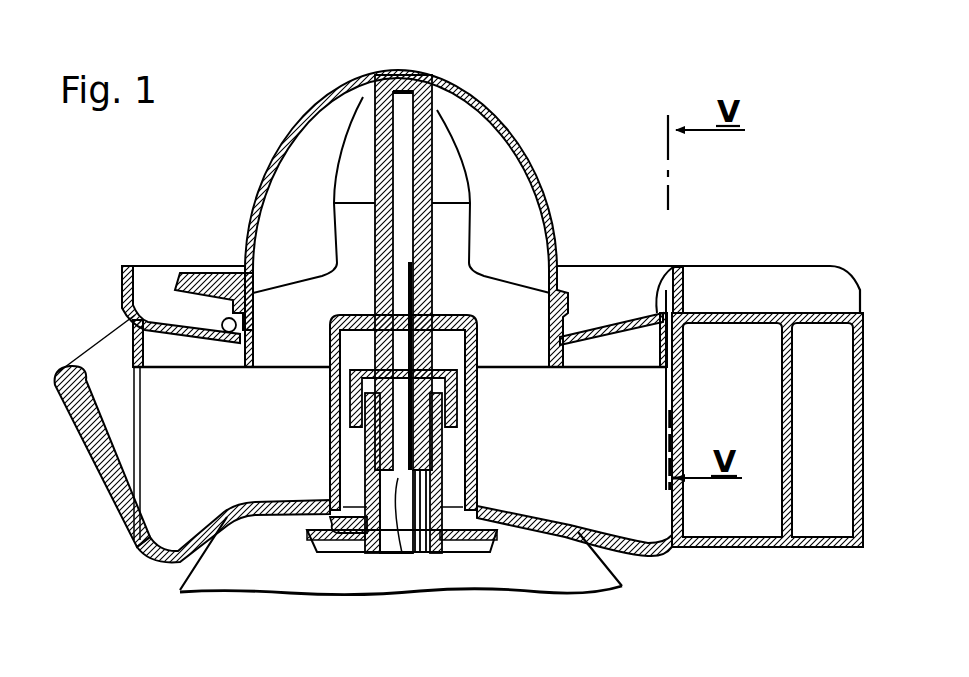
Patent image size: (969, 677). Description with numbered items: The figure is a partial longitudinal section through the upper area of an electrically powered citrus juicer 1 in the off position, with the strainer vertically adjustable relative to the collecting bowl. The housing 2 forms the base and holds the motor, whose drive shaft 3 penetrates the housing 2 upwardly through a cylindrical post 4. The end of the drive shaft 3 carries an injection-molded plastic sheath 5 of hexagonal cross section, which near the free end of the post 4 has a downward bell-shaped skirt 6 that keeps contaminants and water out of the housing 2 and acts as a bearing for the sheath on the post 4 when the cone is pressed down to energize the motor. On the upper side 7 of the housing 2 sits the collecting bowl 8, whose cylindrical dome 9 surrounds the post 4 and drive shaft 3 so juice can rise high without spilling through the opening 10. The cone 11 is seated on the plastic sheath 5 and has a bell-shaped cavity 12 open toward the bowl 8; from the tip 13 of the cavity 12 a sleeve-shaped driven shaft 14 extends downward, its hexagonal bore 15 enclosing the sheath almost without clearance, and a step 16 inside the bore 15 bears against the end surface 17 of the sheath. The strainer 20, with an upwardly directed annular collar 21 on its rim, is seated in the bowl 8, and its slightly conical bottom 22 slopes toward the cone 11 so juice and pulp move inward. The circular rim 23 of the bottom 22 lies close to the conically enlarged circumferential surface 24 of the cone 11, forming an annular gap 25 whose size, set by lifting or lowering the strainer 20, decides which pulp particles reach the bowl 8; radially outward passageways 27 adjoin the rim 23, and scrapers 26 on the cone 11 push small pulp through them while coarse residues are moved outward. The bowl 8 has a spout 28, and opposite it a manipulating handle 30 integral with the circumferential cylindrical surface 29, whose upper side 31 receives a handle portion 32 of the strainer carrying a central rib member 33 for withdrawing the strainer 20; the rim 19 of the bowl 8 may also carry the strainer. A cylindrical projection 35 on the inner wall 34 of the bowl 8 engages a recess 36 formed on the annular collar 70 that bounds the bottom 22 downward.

The citrus juicer 1 is at (540, 128).
The housing 2 is at (543, 567).
The drive shaft 3 is at (403, 490).
The cylindrical post 4 is at (437, 497).
The plastic sheath 5 is at (423, 343).
The bell-shaped skirt 6 is at (458, 410).
The upper side 7 is at (337, 530).
The collecting bowl 8 is at (280, 517).
The cylindrical dome 9 is at (333, 412).
The opening 10 is at (372, 312).
The cone 11 is at (498, 110).
The bell-shaped cavity 12 is at (518, 188).
The tip 13 is at (396, 71).
The sleeve-shaped driven shaft 14 is at (380, 157).
The bore 15 is at (377, 181).
The step 16 is at (430, 226).
The end surface 17 is at (377, 222).
The rim 19 is at (703, 310).
The strainer 20 is at (160, 315).
The annular collar 21 is at (128, 266).
The bottom 22 is at (173, 330).
The circular rim 23 is at (567, 368).
The circumferential surface 24 is at (213, 336).
The annular gap 25 is at (564, 337).
The scrapers 26 is at (205, 287).
The passageways 27 is at (578, 335).
The spout 28 is at (83, 393).
The circumferential cylindrical surface 29 is at (681, 484).
The manipulating handle 30 is at (800, 548).
The upper side 31 is at (817, 312).
The handle portion 32 is at (787, 312).
The rib member 33 is at (750, 283).
The inner wall 34 is at (668, 397).
The projection 35 is at (684, 345).
The recess 36 is at (658, 293).
The annular collar 70 is at (130, 350).